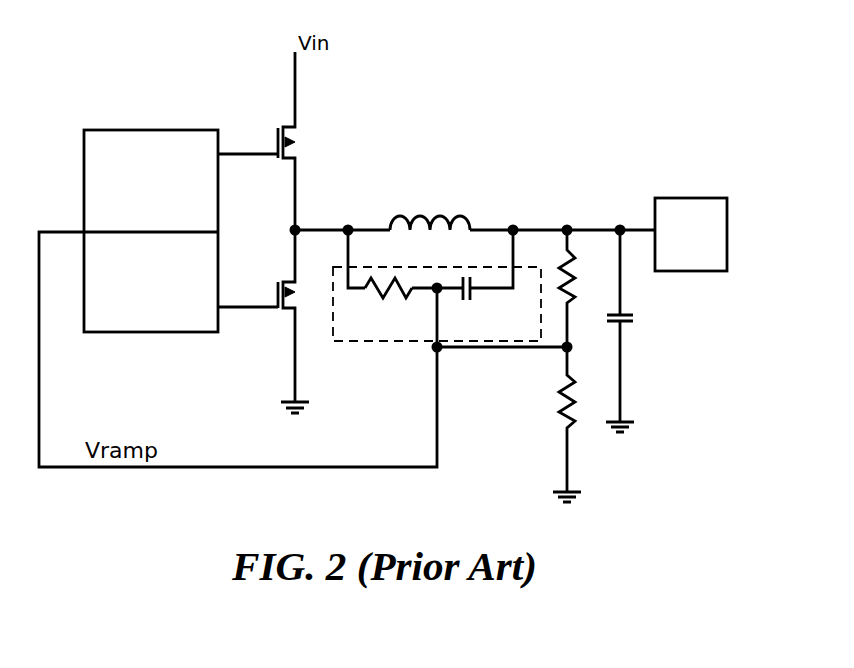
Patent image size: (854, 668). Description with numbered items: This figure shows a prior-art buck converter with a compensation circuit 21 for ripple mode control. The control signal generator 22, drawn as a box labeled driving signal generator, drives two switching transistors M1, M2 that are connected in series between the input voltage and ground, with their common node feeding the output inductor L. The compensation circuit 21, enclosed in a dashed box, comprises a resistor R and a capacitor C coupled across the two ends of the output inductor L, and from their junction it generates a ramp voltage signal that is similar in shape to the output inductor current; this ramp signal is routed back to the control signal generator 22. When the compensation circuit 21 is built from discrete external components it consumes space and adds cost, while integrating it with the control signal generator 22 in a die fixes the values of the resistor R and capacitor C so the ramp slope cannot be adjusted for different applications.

The compensation circuit 21 is at (466, 266).
The control signal generator 22 is at (128, 130).
The high-side transistor M1 is at (273, 141).
The low-side transistor M2 is at (273, 321).
The output inductor L is at (430, 210).
The resistor R is at (388, 304).
The capacitor C is at (468, 303).